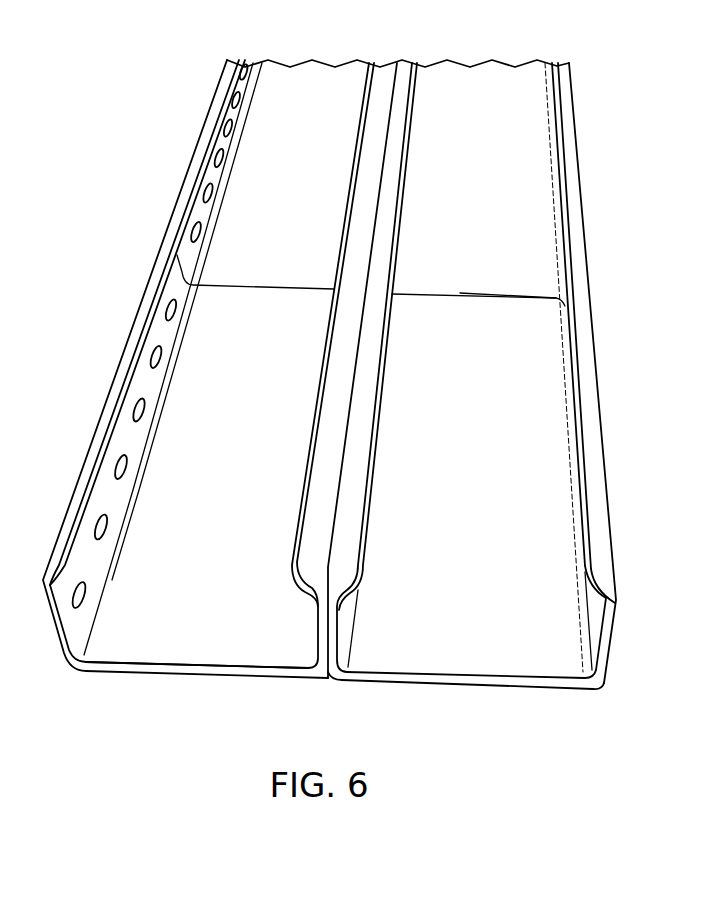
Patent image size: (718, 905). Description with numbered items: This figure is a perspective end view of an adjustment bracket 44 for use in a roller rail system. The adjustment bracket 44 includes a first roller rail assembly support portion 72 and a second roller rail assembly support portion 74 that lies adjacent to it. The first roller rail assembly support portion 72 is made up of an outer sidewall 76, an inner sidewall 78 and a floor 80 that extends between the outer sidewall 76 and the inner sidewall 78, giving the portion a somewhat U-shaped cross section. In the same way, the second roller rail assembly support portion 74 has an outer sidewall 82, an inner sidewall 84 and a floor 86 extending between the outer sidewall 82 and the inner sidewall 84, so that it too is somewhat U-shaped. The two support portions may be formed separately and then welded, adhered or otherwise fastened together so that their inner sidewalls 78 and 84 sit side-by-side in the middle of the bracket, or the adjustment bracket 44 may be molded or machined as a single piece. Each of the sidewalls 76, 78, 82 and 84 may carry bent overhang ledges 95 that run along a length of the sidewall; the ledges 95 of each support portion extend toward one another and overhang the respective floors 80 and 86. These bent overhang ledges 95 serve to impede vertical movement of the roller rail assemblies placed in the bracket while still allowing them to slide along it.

The adjustment bracket 44 is at (308, 183).
The first roller rail assembly support portion 72 is at (157, 336).
The second roller rail assembly support portion 74 is at (552, 349).
The outer sidewall 76 is at (96, 450).
The inner sidewall 78 is at (368, 148).
The floor 80 is at (158, 643).
The outer sidewall 82 is at (597, 450).
The inner sidewall 84 is at (403, 222).
The floor 86 is at (463, 653).
The bent overhang ledges 95 is at (206, 140).